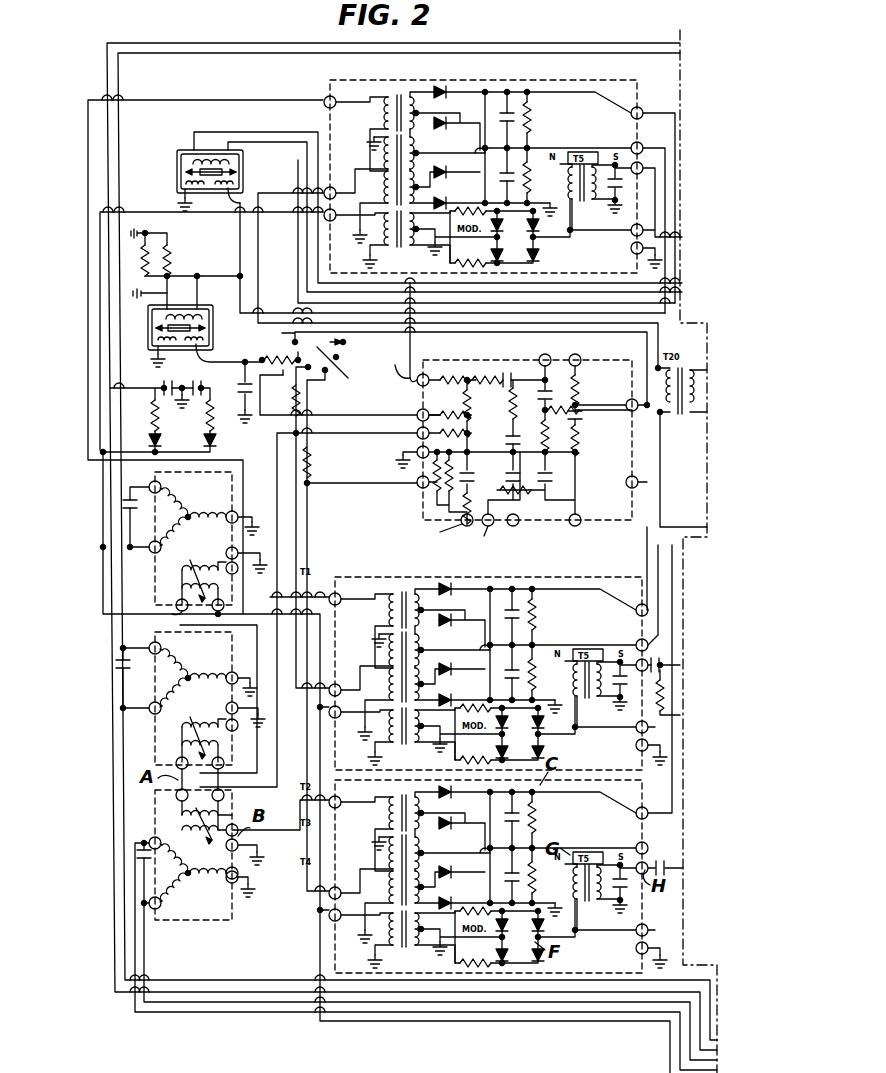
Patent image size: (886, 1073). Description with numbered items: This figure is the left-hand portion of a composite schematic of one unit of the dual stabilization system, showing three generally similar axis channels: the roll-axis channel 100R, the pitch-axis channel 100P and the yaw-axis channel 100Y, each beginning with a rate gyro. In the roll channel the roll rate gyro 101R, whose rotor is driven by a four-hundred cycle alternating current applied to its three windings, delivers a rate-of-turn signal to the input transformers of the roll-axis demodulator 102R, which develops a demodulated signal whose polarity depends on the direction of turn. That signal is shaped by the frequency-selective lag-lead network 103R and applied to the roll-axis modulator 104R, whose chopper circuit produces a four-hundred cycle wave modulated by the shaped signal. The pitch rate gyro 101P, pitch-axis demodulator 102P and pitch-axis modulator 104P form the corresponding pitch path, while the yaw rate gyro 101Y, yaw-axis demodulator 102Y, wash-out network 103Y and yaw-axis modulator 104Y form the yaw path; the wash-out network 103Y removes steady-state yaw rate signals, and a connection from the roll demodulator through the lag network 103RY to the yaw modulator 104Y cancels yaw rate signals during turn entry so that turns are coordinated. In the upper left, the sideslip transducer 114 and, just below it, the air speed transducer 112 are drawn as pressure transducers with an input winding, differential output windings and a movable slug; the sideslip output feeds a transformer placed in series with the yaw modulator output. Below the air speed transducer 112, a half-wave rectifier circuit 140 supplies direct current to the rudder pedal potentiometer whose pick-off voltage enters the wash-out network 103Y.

The sideslip transducer 114 is at (175, 163).
The air speed transducer 112 is at (150, 345).
The half-wave rectifier circuit 140 is at (158, 418).
The yaw-axis channel 100Y is at (149, 538).
The yaw rate gyro 101Y is at (170, 581).
The pitch-axis channel 100P is at (145, 698).
The pitch rate gyro 101P is at (170, 632).
The roll-axis channel 100R is at (133, 855).
The roll rate gyro 101R is at (232, 905).
The yaw-axis demodulator 102Y is at (493, 176).
The yaw-axis modulator 104Y is at (492, 237).
The pitch-axis demodulator 102P is at (498, 673).
The pitch-axis modulator 104P is at (497, 734).
The roll-axis demodulator 102R is at (498, 876).
The roll-axis modulator 104R is at (497, 937).
The wash-out network 103Y is at (511, 443).
The lag network 103RY is at (445, 397).
The frequency-selective lag-lead network 103R is at (445, 492).